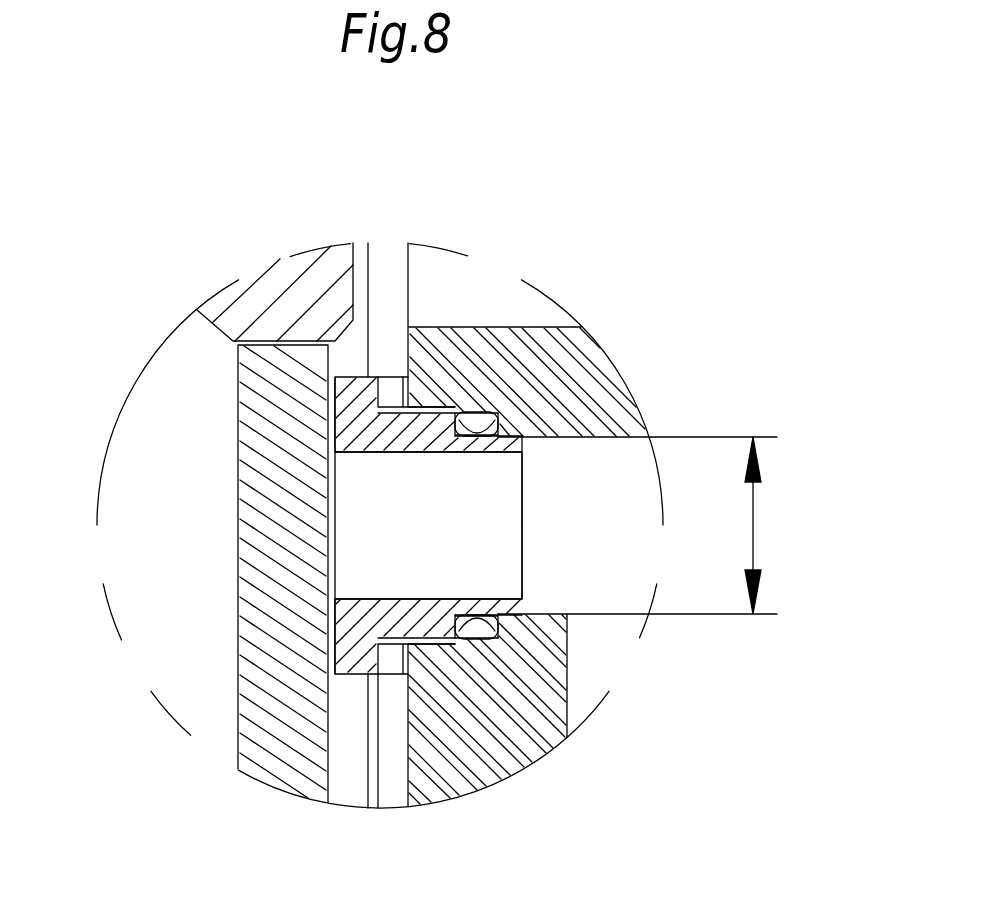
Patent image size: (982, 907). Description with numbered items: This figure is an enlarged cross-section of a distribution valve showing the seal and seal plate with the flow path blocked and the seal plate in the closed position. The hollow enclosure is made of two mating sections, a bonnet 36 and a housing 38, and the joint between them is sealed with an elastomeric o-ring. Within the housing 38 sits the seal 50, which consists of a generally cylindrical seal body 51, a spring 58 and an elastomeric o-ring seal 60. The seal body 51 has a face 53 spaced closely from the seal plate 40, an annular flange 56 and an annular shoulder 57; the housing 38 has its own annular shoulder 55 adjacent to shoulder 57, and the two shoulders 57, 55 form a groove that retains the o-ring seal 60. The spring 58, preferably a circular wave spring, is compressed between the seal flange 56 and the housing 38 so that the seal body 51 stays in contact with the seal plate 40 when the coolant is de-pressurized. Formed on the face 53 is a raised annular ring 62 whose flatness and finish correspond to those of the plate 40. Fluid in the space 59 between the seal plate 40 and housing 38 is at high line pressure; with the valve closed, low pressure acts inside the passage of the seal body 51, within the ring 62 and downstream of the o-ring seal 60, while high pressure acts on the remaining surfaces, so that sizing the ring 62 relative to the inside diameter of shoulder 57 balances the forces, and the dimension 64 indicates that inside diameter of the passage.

The bonnet 36 is at (293, 274).
The housing 38 is at (537, 754).
The seal plate 40 is at (237, 563).
The seal 50 is at (472, 503).
The seal body 51 is at (462, 602).
The face 53 is at (329, 655).
The annular shoulder 55 is at (461, 412).
The annular flange 56 is at (345, 377).
The annular shoulder 57 is at (490, 634).
The spring 58 is at (393, 385).
The space 59 is at (389, 268).
The o-ring seal 60 is at (483, 419).
The raised annular ring 62 is at (330, 434).
The passage diameter dimension 64 is at (753, 524).